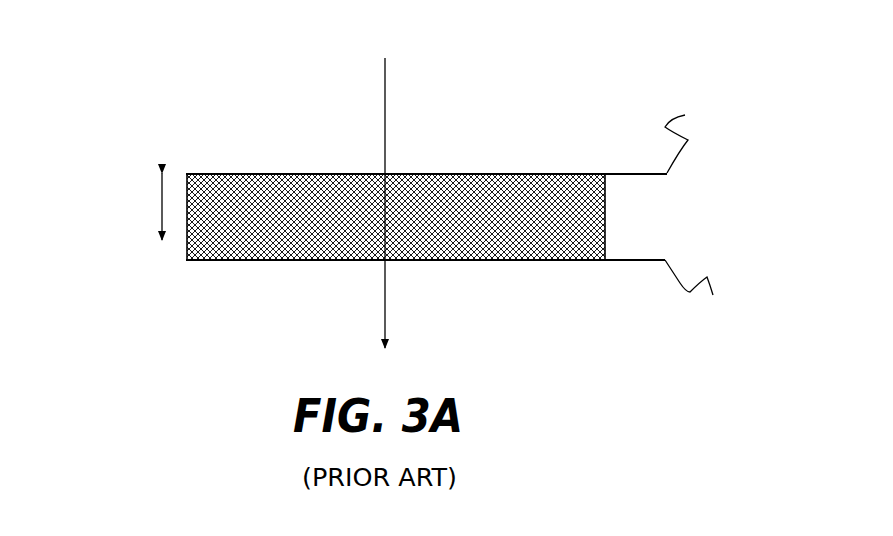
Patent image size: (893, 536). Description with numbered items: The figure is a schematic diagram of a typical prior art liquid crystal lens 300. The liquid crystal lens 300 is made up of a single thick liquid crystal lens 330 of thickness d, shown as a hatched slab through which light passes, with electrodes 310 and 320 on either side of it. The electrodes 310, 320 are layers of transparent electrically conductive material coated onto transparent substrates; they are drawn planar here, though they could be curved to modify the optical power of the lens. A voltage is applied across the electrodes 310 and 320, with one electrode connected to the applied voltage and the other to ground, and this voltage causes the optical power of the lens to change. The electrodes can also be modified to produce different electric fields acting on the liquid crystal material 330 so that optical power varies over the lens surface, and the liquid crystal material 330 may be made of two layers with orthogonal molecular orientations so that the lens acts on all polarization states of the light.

The liquid crystal lens 300 is at (193, 58).
The electrode 310 is at (187, 173).
The electrode 320 is at (186, 261).
The thick liquid crystal lens 330 is at (248, 243).